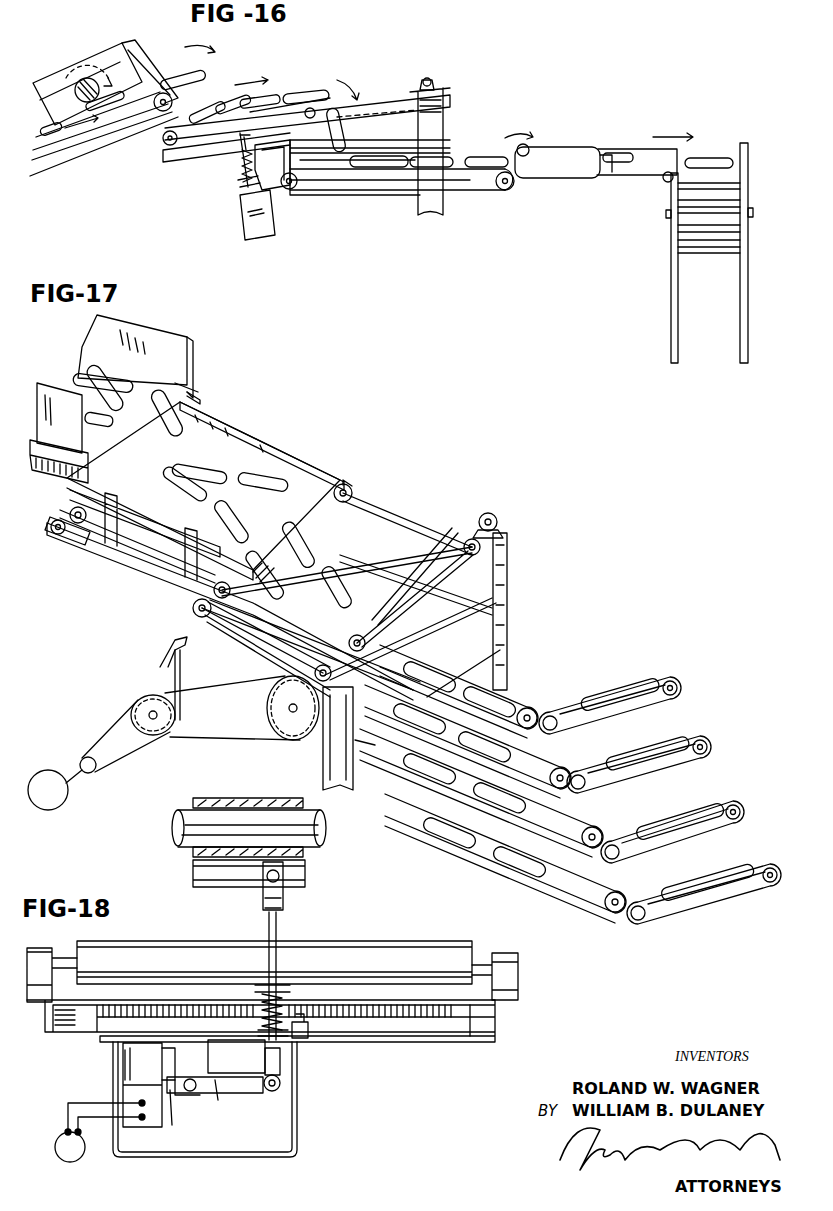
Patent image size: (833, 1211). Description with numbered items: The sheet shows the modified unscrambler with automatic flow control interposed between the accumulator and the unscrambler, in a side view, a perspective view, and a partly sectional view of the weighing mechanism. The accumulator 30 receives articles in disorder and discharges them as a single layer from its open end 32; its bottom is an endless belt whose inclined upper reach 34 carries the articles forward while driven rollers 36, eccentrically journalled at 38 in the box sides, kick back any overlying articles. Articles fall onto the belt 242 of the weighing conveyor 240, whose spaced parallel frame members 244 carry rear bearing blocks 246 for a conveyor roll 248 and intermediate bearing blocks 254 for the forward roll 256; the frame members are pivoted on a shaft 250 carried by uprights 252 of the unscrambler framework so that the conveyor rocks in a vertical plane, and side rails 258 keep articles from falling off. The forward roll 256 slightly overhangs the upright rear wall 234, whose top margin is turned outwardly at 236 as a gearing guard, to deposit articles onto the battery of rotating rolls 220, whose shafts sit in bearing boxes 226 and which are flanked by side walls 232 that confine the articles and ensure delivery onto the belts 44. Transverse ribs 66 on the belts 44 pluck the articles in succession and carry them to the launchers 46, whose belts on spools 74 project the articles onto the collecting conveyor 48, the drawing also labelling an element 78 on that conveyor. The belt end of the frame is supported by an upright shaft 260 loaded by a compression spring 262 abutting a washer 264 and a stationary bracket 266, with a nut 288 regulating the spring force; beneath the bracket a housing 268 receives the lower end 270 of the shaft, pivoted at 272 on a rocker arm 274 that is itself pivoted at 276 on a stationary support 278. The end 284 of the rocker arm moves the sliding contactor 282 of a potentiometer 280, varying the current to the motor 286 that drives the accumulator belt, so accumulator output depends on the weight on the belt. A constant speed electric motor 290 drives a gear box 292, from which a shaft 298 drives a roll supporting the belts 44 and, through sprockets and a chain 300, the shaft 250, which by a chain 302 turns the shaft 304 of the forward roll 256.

In FIG. 16, the accumulator 30 is at (103, 38).
In FIG. 17, the accumulator 30 is at (137, 316).
In FIG. 16, the open end 32 is at (145, 70).
In FIG. 17, the open end 32 is at (192, 363).
In FIG. 16, the inclined upper reach 34 is at (136, 40).
In FIG. 17, the inclined upper reach 34 is at (188, 338).
In FIG. 16, the driven rollers 36 is at (60, 78).
In FIG. 16, the eccentric journal 38 is at (84, 80).
In FIG. 16, the belts 44 is at (475, 192).
In FIG. 17, the belts 44 is at (530, 690).
In FIG. 18, the belts 44 is at (425, 948).
In FIG. 16, the launchers 46 is at (570, 194).
In FIG. 17, the launchers 46 is at (690, 692).
In FIG. 16, the collecting conveyor 48 is at (758, 262).
In FIG. 16, the transverse ribs 66 is at (506, 191).
In FIG. 17, the transverse ribs 66 is at (528, 700).
In FIG. 16, the spools 74 is at (528, 148).
In FIG. 17, the spools 74 is at (675, 682).
In FIG. 16, the discharge conveyor slat 78 is at (735, 176).
In FIG. 16, the rotating rolls 220 is at (445, 128).
In FIG. 17, the rotating rolls 220 is at (395, 530).
In FIG. 17, the bearing boxes 226 is at (350, 745).
In FIG. 17, the side walls 232 is at (420, 555).
In FIG. 17, the upright rear wall 234 is at (240, 545).
In FIG. 16, the outwardly turned top margin 236 is at (240, 170).
In FIG. 17, the outwardly turned top margin 236 is at (160, 668).
In FIG. 16, the weighing conveyor 240 is at (168, 168).
In FIG. 17, the weighing conveyor 240 is at (90, 569).
In FIG. 18, the weighing conveyor 240 is at (508, 1021).
In FIG. 16, the belt 242 is at (278, 100).
In FIG. 17, the belt 242 is at (265, 495).
In FIG. 18, the belt 242 is at (212, 798).
In FIG. 16, the frame members 244 is at (168, 160).
In FIG. 17, the frame members 244 is at (375, 512).
In FIG. 18, the frame members 244 is at (193, 878).
In FIG. 17, the bearing blocks 246 is at (55, 520).
In FIG. 16, the conveyor roll 248 is at (163, 141).
In FIG. 17, the conveyor roll 248 is at (72, 510).
In FIG. 16, the shaft 250 is at (432, 80).
In FIG. 17, the shaft 250 is at (482, 515).
In FIG. 16, the uprights 252 is at (445, 110).
In FIG. 17, the uprights 252 is at (509, 562).
In FIG. 17, the bearing blocks 254 is at (350, 487).
In FIG. 16, the forward roll 256 is at (312, 107).
In FIG. 17, the forward roll 256 is at (215, 592).
In FIG. 18, the forward roll 256 is at (318, 828).
In FIG. 16, the side rails 258 is at (262, 95).
In FIG. 17, the side rails 258 is at (252, 440).
In FIG. 16, the upright shaft 260 is at (240, 185).
In FIG. 18, the upright shaft 260 is at (280, 915).
In FIG. 16, the compression spring 262 is at (242, 210).
In FIG. 18, the compression spring 262 is at (292, 1012).
In FIG. 16, the washer 264 is at (240, 200).
In FIG. 18, the washer 264 is at (284, 995).
In FIG. 16, the bracket 266 is at (272, 188).
In FIG. 18, the bracket 266 is at (306, 1035).
In FIG. 16, the housing 268 is at (265, 235).
In FIG. 18, the housing 268 is at (295, 1125).
In FIG. 18, the lower end 270 is at (268, 1050).
In FIG. 18, the pivot 272 is at (282, 1085).
In FIG. 18, the rocker arm 274 is at (242, 1090).
In FIG. 18, the pivot 276 is at (192, 1092).
In FIG. 18, the stationary support 278 is at (215, 1100).
In FIG. 18, the potentiometer 280 is at (130, 1070).
In FIG. 18, the sliding contactor 282 is at (160, 1060).
In FIG. 18, the end of rocker arm 284 is at (172, 1100).
In FIG. 18, the motor 286 is at (80, 1150).
In FIG. 18, the nut 288 is at (257, 988).
In FIG. 17, the constant speed electric motor 290 is at (64, 800).
In FIG. 17, the gear box 292 is at (128, 750).
In FIG. 16, the shaft 298 is at (300, 190).
In FIG. 17, the shaft 298 is at (172, 712).
In FIG. 18, the shaft 298 is at (482, 962).
In FIG. 17, the chain 300 is at (230, 715).
In FIG. 17, the chain 302 is at (267, 638).
In FIG. 17, the shaft 304 is at (167, 650).